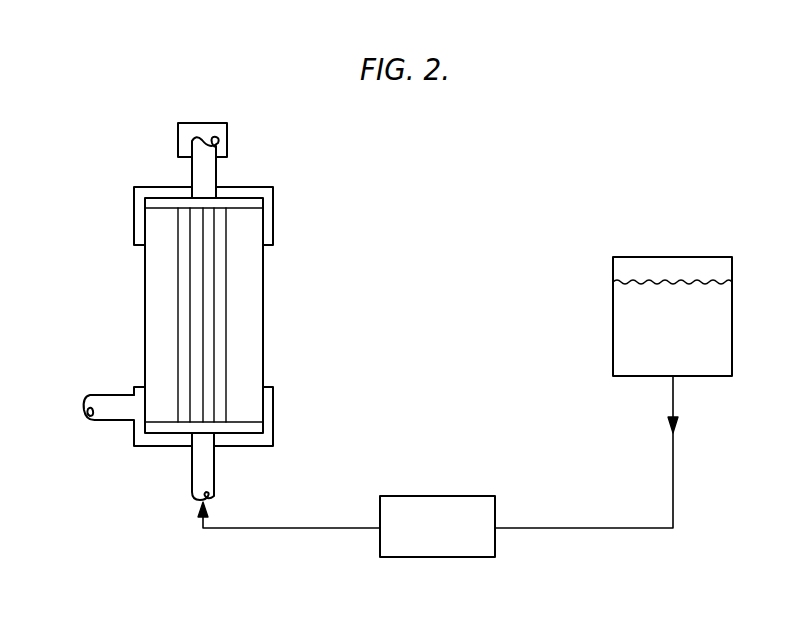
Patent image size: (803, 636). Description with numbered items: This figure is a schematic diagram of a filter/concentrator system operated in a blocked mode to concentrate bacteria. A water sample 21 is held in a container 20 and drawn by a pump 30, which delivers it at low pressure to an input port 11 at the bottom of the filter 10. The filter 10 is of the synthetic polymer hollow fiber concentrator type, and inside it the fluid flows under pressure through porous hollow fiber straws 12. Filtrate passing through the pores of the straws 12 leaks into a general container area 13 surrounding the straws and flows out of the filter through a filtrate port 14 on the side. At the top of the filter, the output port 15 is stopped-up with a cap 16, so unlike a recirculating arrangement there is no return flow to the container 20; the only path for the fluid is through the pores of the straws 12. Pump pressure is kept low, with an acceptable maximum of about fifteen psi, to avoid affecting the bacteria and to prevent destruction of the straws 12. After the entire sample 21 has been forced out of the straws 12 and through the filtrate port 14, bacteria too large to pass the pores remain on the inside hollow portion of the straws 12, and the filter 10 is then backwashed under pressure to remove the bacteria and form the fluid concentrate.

The filter 10 is at (76, 272).
The input port 11 is at (192, 477).
The hollow fiber straws 12 is at (226, 310).
The general container area 13 is at (165, 372).
The filtrate port 14 is at (103, 395).
The output port 15 is at (216, 177).
The cap 16 is at (188, 123).
The container 20 is at (613, 310).
The water sample 21 is at (658, 308).
The pump 30 is at (428, 496).